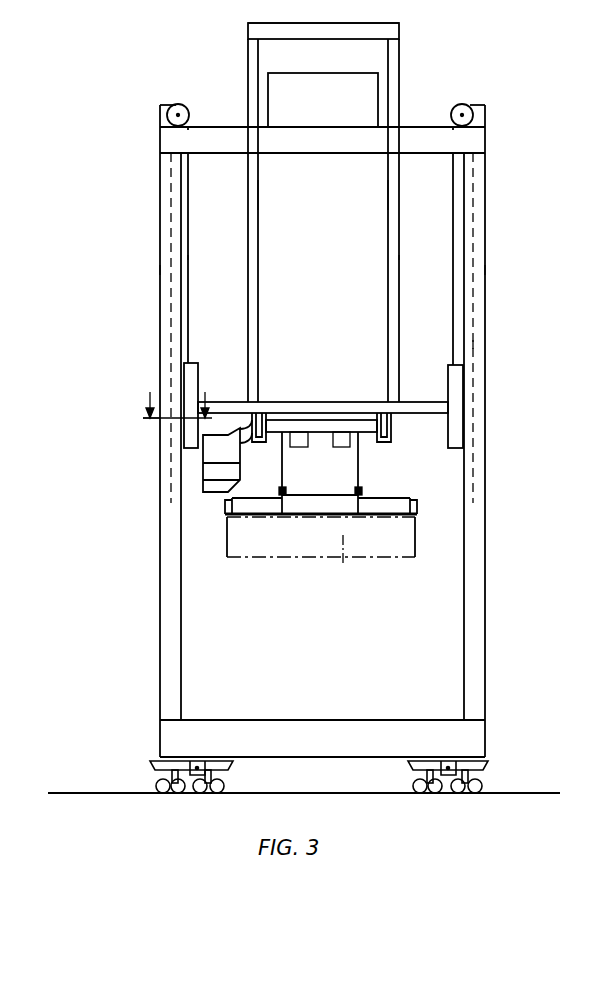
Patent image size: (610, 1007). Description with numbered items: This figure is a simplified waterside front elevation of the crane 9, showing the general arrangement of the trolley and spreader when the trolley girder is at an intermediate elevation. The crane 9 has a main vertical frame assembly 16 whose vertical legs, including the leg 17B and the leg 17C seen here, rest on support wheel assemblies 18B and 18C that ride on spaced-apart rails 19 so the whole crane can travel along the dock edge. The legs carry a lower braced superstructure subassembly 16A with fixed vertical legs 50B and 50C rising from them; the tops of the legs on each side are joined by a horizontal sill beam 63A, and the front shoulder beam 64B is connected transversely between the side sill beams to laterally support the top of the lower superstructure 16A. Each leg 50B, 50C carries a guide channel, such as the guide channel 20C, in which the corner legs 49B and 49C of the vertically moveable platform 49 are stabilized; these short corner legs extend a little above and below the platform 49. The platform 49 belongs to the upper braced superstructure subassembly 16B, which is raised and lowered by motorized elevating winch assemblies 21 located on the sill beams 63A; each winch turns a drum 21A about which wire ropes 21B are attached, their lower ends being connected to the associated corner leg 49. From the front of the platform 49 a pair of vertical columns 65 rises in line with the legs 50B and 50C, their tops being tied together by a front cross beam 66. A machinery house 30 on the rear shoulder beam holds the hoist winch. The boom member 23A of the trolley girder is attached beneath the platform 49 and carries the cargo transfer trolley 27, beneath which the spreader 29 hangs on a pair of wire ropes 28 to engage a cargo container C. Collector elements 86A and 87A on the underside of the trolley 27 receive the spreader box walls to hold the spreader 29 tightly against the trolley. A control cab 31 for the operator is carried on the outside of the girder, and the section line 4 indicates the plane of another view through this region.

The section line 4 is at (178, 395).
The crane 9 is at (139, 436).
The main vertical frame assembly 16 is at (147, 540).
The lower braced superstructure subassembly 16A is at (326, 604).
The upper braced superstructure subassembly 16B is at (342, 296).
The vertical leg 17B is at (168, 680).
The vertical leg 17C is at (485, 678).
The support wheel assembly 18B is at (150, 783).
The support wheel assembly 18C is at (520, 763).
The rails 19 is at (98, 793).
The guide channel 20C is at (473, 345).
The motorized elevating winch assembly 21 is at (160, 105).
The drum 21A is at (178, 104).
The wire ropes 21B is at (207, 266).
The boom member 23A is at (262, 430).
The cargo transfer trolley 27 is at (352, 425).
The wire ropes 28 is at (362, 491).
The spreader 29 is at (312, 505).
The machinery house 30 is at (338, 109).
The control cab 31 is at (214, 493).
The vertically moveable platform 49 is at (312, 402).
The platform front corner leg 49B is at (198, 368).
The platform front corner leg 49C is at (448, 378).
The fixed vertical leg 50B is at (160, 270).
The fixed vertical leg 50C is at (485, 268).
The horizontal sill beam 63A is at (480, 135).
The front shoulder beam 64B is at (213, 127).
The vertical columns 65 is at (388, 198).
The front cross beam 66 is at (357, 23).
The collector element 86A is at (297, 445).
The collector element 87A is at (347, 442).
The cargo container C is at (348, 562).